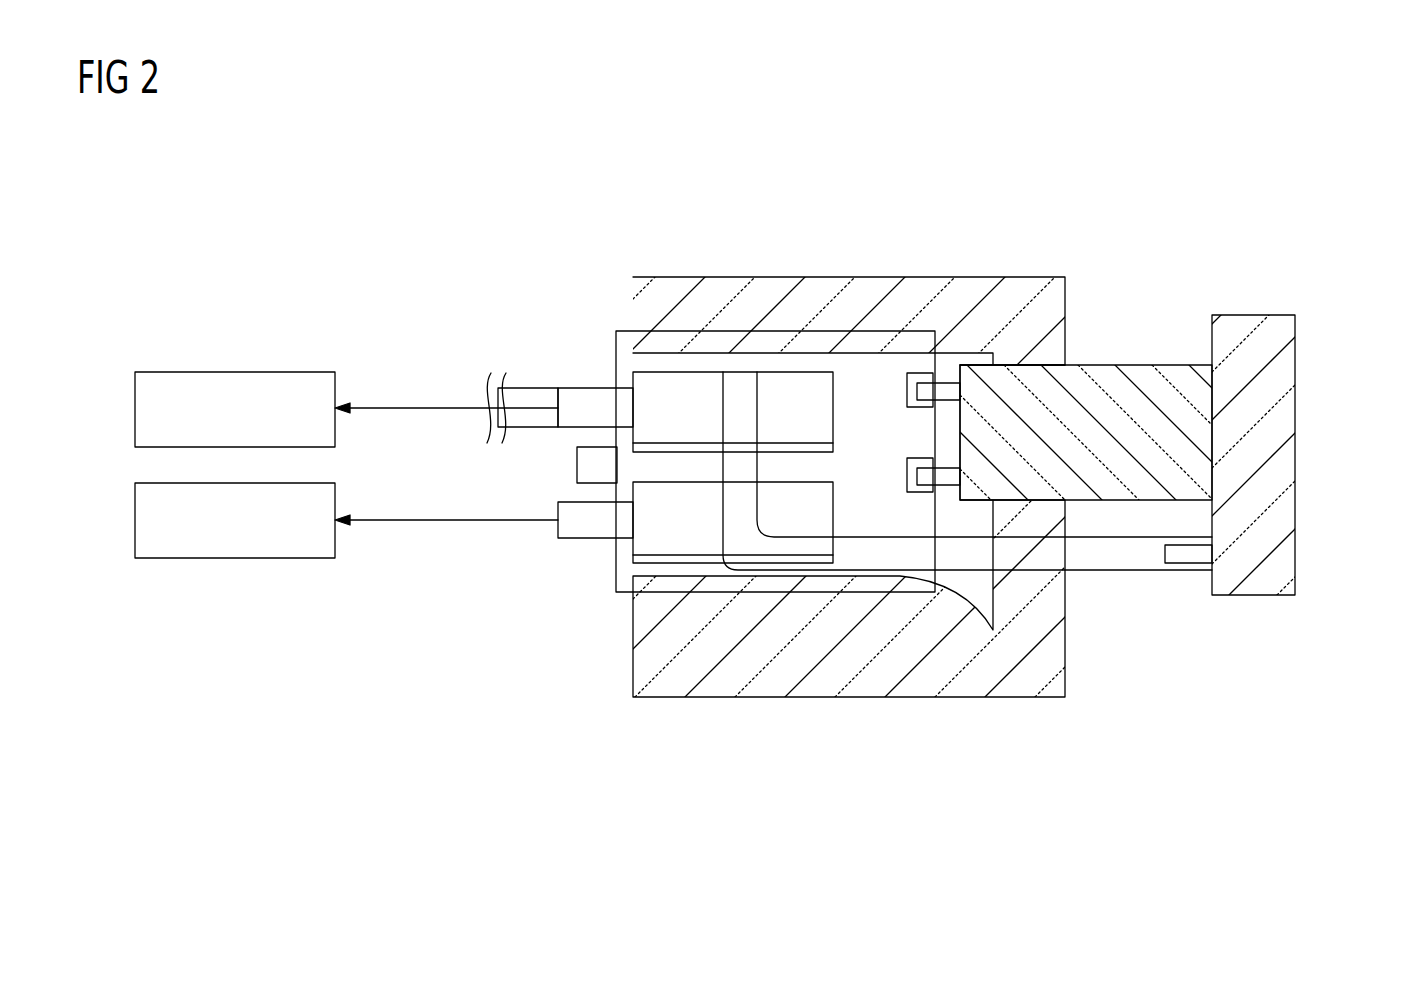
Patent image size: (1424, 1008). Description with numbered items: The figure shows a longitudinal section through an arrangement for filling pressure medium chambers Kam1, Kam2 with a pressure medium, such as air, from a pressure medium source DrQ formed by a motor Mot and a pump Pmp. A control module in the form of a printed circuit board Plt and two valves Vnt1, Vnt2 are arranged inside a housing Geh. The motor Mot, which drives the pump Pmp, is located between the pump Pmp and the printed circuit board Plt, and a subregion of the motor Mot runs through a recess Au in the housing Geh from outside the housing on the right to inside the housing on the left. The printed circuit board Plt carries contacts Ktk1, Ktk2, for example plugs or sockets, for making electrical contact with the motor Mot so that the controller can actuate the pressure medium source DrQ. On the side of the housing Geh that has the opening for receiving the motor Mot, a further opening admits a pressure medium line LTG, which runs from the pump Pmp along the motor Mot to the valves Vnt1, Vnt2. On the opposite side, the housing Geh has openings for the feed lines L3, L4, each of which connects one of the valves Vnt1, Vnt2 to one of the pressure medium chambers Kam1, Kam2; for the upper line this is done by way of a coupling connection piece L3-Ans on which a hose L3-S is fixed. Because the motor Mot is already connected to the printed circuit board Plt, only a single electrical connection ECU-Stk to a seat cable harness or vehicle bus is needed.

The pressure medium chamber Kam1 is at (238, 385).
The pressure medium chamber Kam2 is at (237, 543).
The feed line L3 is at (392, 405).
The feed line L4 is at (392, 525).
The hose L3-S is at (525, 388).
The coupling connection piece L3-Ans is at (592, 388).
The electrical connection ECU-Stk is at (597, 465).
The printed circuit board Plt is at (640, 575).
The valve Vnt1 is at (700, 403).
The valve Vnt2 is at (700, 533).
The contact Ktk1 is at (917, 388).
The contact Ktk2 is at (907, 474).
The housing Geh is at (998, 313).
The recess Au is at (1065, 365).
The motor Mot is at (1178, 370).
The pump Pmp is at (1255, 335).
The pressure medium source DrQ is at (1185, 389).
The pressure medium line LTG is at (1127, 553).